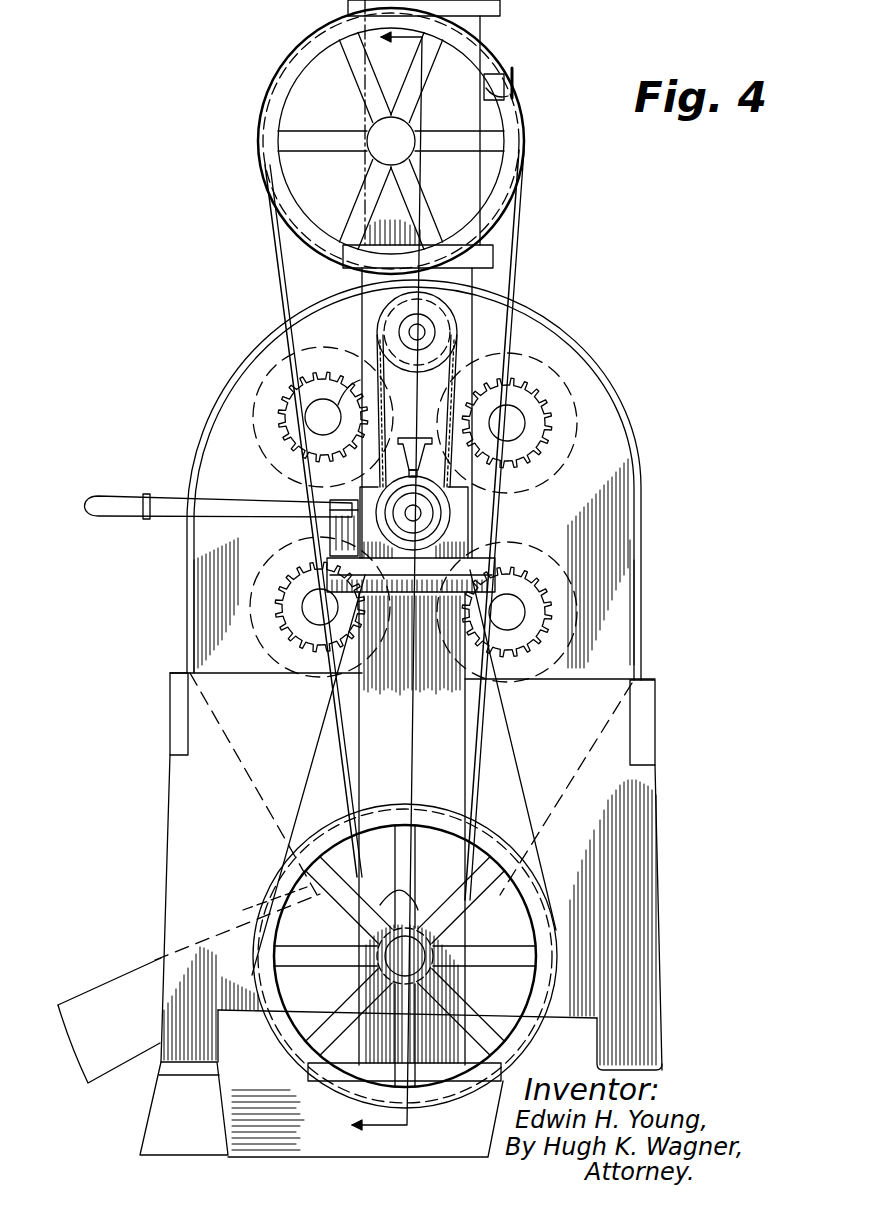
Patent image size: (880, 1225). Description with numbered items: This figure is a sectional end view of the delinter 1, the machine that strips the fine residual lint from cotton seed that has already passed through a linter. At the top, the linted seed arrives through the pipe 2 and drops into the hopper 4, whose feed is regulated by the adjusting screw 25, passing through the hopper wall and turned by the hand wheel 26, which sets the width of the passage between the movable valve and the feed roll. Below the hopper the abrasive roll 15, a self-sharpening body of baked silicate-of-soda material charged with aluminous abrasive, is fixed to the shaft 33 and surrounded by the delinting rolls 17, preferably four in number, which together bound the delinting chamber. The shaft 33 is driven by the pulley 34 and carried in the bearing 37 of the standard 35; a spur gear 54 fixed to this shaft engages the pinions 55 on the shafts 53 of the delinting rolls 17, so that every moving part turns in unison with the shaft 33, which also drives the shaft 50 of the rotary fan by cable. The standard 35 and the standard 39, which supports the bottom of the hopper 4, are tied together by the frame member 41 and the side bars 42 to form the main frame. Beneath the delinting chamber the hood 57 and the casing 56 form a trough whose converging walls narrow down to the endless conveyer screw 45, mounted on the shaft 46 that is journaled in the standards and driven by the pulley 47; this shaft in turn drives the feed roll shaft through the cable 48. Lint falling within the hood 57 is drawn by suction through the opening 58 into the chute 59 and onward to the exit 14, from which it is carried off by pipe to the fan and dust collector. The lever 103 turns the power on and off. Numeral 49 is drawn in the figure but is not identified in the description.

The delinter 1 is at (210, 447).
The pipe 2 is at (535, 20).
The hopper 4 is at (391, 141).
The exit 14 is at (90, 1038).
The abrasive roll 15 is at (335, 408).
The delinting rolls 17 is at (277, 365).
The adjusting screw 25 is at (506, 98).
The hand wheel 26 is at (516, 82).
The shaft 33 is at (468, 534).
The pulley 34 is at (560, 523).
The standard 35 is at (415, 666).
The bearing 37 is at (380, 508).
The standard 39 is at (632, 830).
The frame member 41 is at (321, 1109).
The side bars 42 is at (180, 705).
The endless conveyer screw 45 is at (440, 940).
The shaft 46 is at (392, 905).
The pulley 47 is at (538, 1043).
The cable 48 is at (505, 262).
The belt / blade 49 is at (518, 778).
The shaft 50 is at (420, 332).
The shafts 53 is at (305, 422).
The spur gear 54 is at (497, 515).
The pinions 55 is at (273, 412).
The casing 56 is at (565, 793).
The hood 57 is at (638, 465).
The opening 58 is at (335, 914).
The chute 59 is at (138, 993).
The lever 103 is at (98, 500).